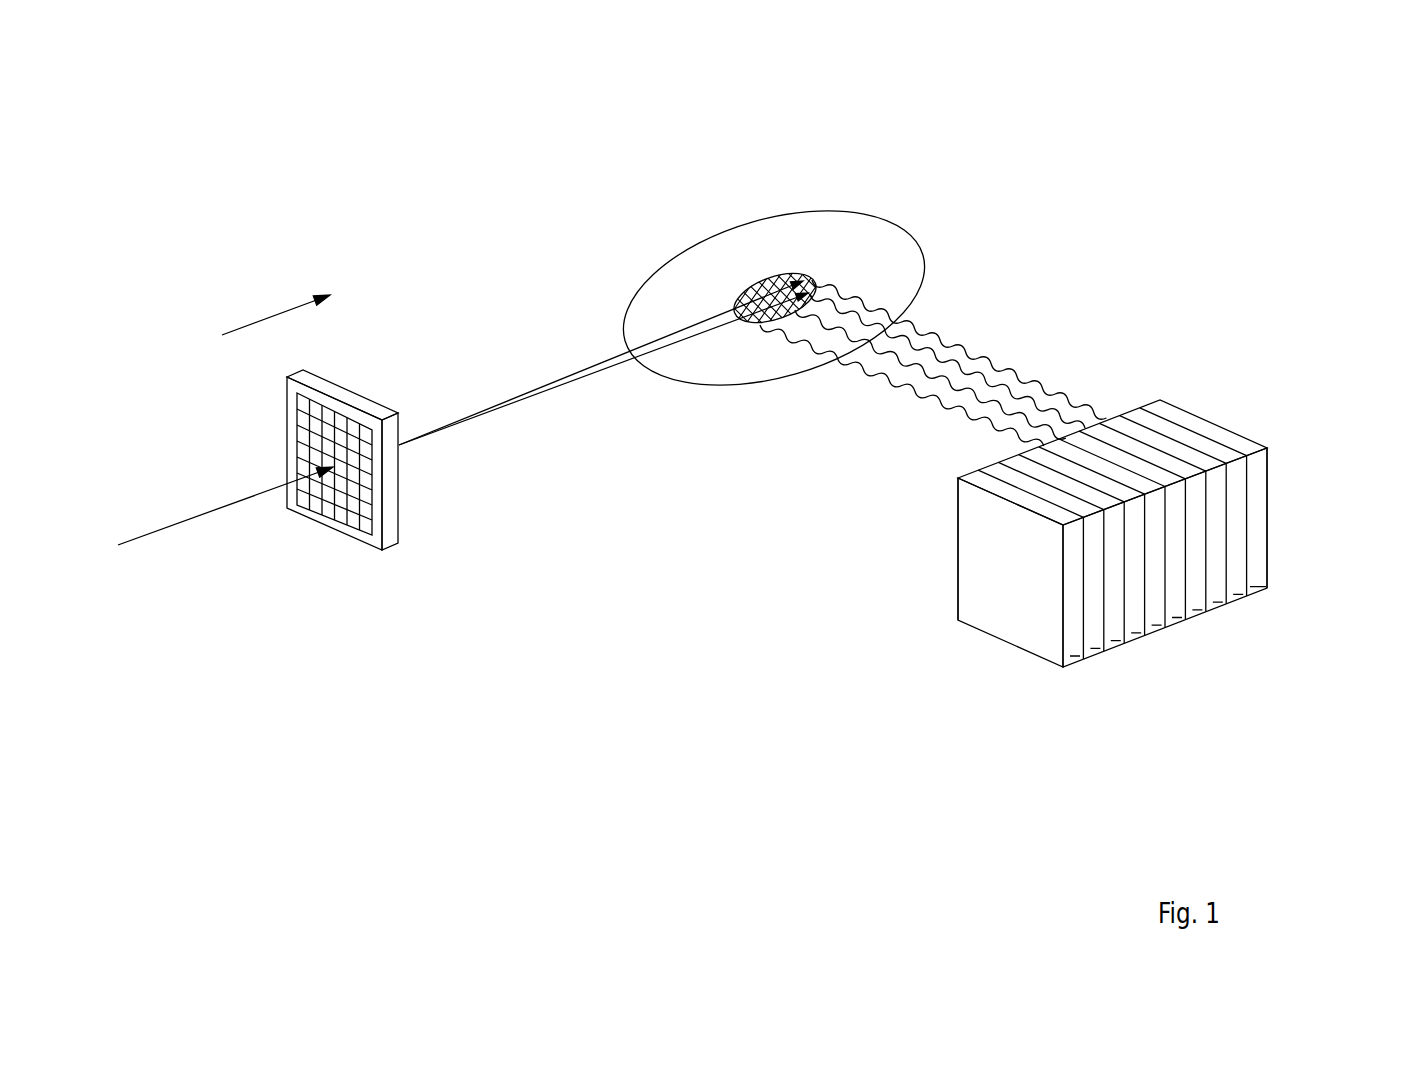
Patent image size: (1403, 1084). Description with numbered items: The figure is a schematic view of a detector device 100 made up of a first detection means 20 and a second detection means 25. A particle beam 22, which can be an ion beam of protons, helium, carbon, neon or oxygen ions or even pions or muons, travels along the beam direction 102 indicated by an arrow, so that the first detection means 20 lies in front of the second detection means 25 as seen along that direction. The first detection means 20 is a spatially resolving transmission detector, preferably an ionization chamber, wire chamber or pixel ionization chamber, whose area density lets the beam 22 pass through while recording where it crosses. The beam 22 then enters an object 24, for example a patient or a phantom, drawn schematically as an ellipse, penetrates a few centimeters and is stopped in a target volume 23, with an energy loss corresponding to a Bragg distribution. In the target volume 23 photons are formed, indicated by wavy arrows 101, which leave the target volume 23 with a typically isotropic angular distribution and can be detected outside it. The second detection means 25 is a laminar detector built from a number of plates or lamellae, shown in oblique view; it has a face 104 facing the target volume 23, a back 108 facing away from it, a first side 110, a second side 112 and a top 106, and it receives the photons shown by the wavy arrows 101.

The detector device 100 is at (486, 258).
The beam direction 102 is at (275, 313).
The particle beam 22 is at (225, 503).
The first detection means 20 is at (395, 497).
The object 24 is at (855, 213).
The target volume 23 is at (773, 275).
The wavy arrows 101 is at (993, 417).
The face 104 is at (957, 492).
The top 106 is at (1185, 435).
The back 108 is at (1217, 547).
The first side 110 is at (993, 537).
The second side 112 is at (1269, 458).
The second detection means 25 is at (1090, 491).